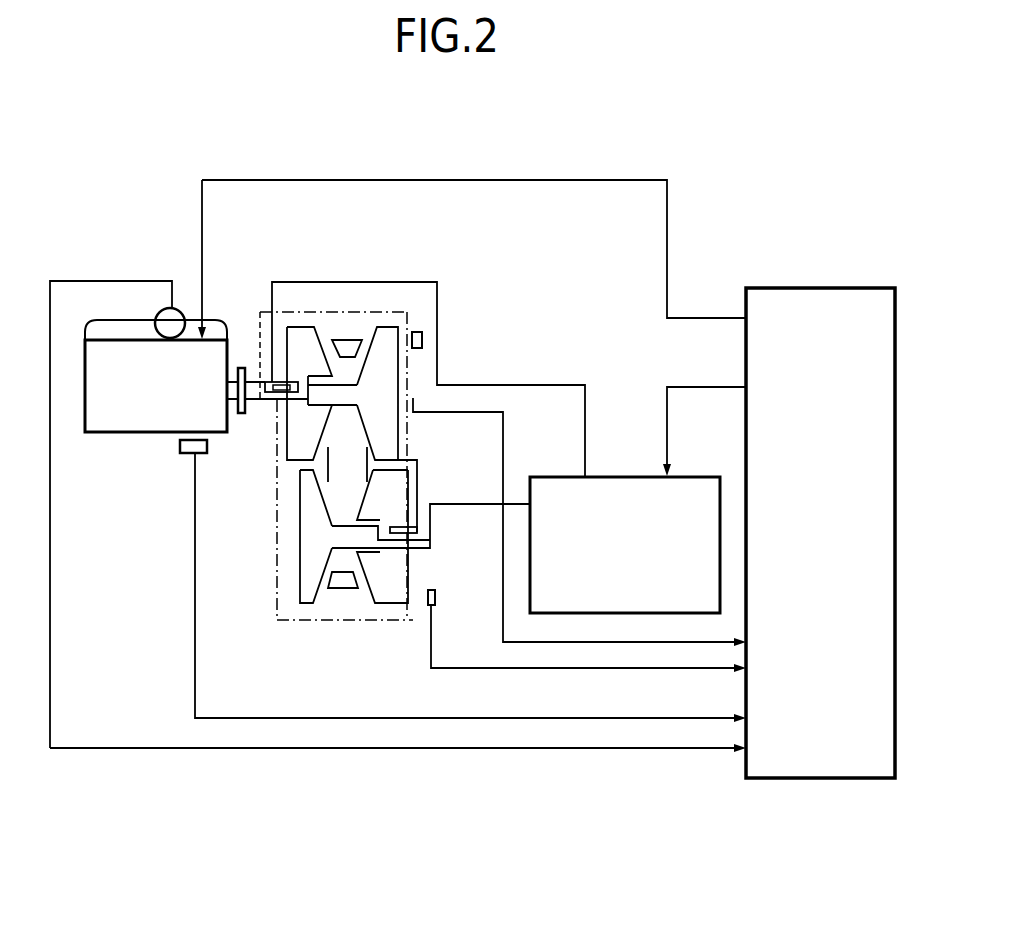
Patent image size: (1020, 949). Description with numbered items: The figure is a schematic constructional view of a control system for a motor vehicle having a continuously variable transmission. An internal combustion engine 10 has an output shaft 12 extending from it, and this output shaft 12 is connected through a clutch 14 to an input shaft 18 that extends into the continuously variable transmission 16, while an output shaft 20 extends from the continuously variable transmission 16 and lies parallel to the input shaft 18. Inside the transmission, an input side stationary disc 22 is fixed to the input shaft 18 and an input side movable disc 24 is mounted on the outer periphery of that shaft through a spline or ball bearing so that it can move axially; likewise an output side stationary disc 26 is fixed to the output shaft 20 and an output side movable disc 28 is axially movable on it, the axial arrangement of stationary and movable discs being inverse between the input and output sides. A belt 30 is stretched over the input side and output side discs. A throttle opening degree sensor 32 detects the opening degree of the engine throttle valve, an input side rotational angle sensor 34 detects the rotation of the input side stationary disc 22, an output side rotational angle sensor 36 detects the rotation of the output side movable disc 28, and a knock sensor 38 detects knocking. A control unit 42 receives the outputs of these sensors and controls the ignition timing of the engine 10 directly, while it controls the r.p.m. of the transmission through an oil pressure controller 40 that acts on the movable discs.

The internal combustion engine 10 is at (107, 442).
The output shaft 12 is at (236, 362).
The clutch 14 is at (242, 416).
The continuously variable transmission 16 is at (303, 633).
The input shaft 18 is at (262, 382).
The output shaft 20 is at (428, 493).
The input side stationary disc 22 is at (388, 326).
The input side movable disc 24 is at (305, 326).
The output side stationary disc 26 is at (298, 595).
The output side movable disc 28 is at (390, 600).
The belt 30 is at (348, 339).
The throttle opening degree sensor 32 is at (182, 311).
The input side rotational angle sensor 34 is at (424, 338).
The output side rotational angle sensor 36 is at (437, 596).
The knock sensor 38 is at (185, 455).
The oil pressure controller 40 is at (692, 476).
The control unit 42 is at (852, 287).